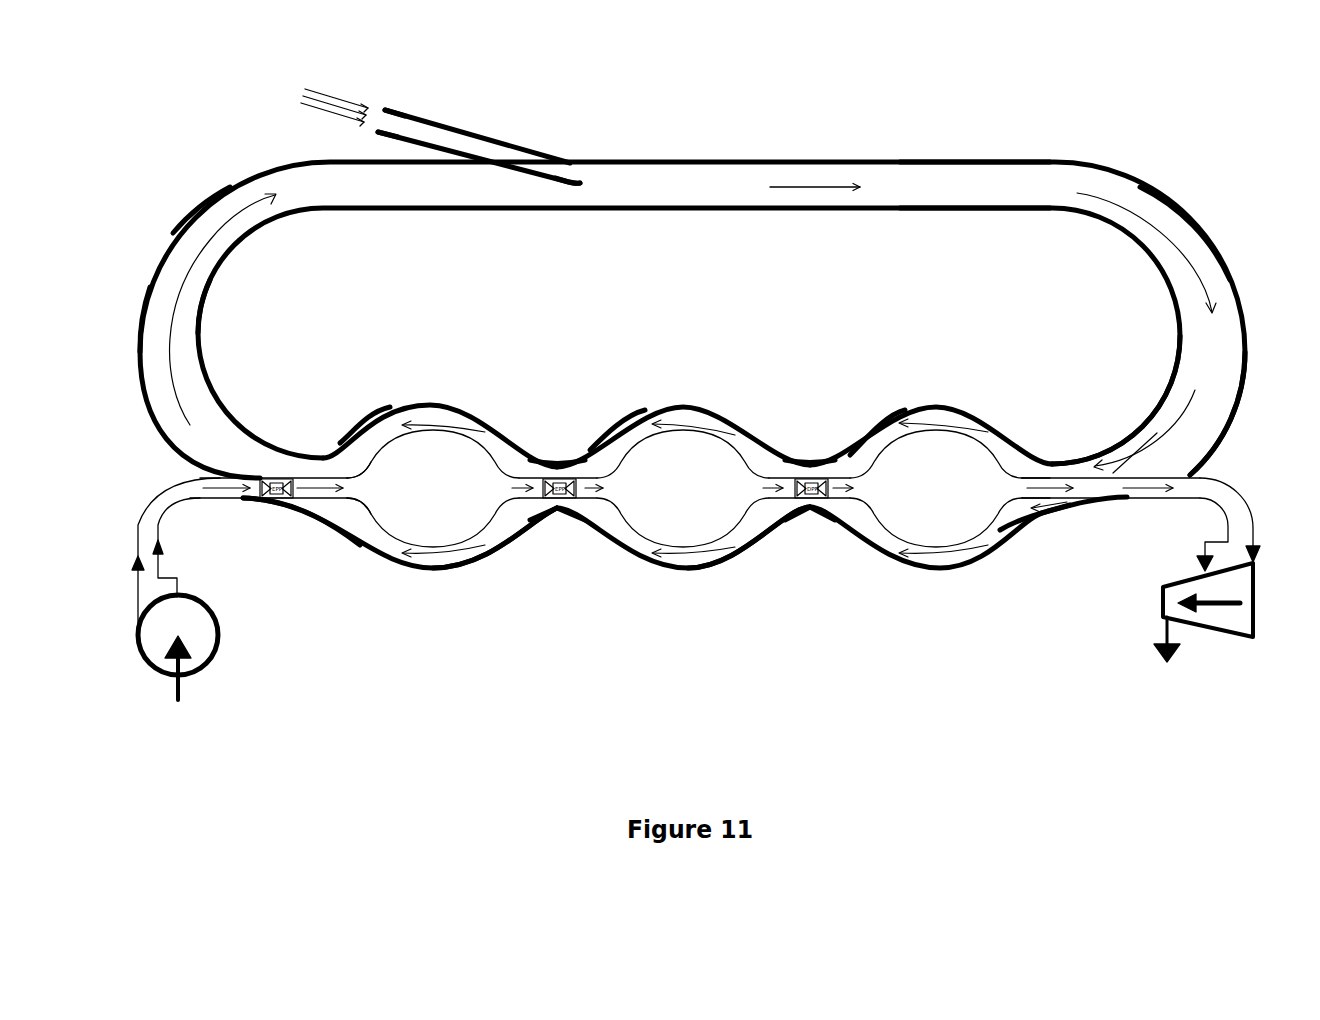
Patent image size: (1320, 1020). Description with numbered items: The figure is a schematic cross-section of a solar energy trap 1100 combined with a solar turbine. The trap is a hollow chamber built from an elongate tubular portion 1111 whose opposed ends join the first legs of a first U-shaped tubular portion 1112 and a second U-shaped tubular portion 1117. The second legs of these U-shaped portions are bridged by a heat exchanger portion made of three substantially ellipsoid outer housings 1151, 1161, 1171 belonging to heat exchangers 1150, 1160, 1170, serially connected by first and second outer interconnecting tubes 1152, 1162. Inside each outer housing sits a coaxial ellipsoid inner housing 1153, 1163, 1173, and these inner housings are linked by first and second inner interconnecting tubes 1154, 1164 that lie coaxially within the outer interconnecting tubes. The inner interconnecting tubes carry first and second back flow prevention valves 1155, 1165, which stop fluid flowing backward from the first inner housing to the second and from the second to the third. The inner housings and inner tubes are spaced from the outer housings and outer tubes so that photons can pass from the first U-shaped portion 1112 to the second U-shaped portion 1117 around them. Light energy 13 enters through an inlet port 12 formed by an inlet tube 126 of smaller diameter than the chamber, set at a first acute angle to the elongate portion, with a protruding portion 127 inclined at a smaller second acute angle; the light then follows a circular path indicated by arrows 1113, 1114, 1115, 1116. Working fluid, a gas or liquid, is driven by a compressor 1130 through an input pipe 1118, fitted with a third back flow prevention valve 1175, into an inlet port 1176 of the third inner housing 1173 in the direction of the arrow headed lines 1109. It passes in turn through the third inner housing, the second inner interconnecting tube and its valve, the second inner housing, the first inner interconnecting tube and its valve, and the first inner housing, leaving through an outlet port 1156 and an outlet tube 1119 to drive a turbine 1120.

The inlet port 12 is at (380, 110).
The light energy 13 is at (302, 95).
The inlet tube 126 is at (473, 130).
The protruding portion of inlet tube 127 is at (580, 183).
The solar energy trap 1100 is at (1195, 205).
The arrow headed lines 1109 is at (230, 490).
The elongate tubular portion 1111 is at (975, 185).
The first U-shaped tubular portion 1112 is at (1148, 404).
The arrow indicating light path 1113 is at (797, 178).
The arrow indicating light path 1114 is at (1203, 267).
The arrow indicating light path 1115 is at (449, 410).
The arrow indicating light path 1116 is at (188, 267).
The second U-shaped tubular portion 1117 is at (175, 316).
The input pipe 1118 is at (138, 513).
The outlet tube 1119 is at (1230, 483).
The turbine 1120 is at (1162, 607).
The compressor 1130 is at (223, 637).
The first heat exchanger 1150 is at (990, 413).
The first outer housing 1151 is at (870, 420).
The first outer interconnecting tube 1152 is at (803, 460).
The first inner housing 1153 is at (1003, 527).
The first inner interconnecting tube 1154 is at (783, 500).
The first back flow prevention valve 1155 is at (827, 500).
The outlet port 1156 is at (1010, 490).
The second heat exchanger 1160 is at (737, 412).
The second outer housing 1161 is at (607, 417).
The second outer interconnecting tube 1162 is at (553, 463).
The second inner housing 1163 is at (737, 542).
The second inner interconnecting tube 1164 is at (547, 500).
The second back flow prevention valve 1165 is at (573, 503).
The third heat exchanger 1170 is at (497, 410).
The third outer housing 1171 is at (352, 428).
The third inner housing 1173 is at (473, 547).
The third back flow prevention valve 1175 is at (280, 500).
The inlet port 1176 is at (350, 490).